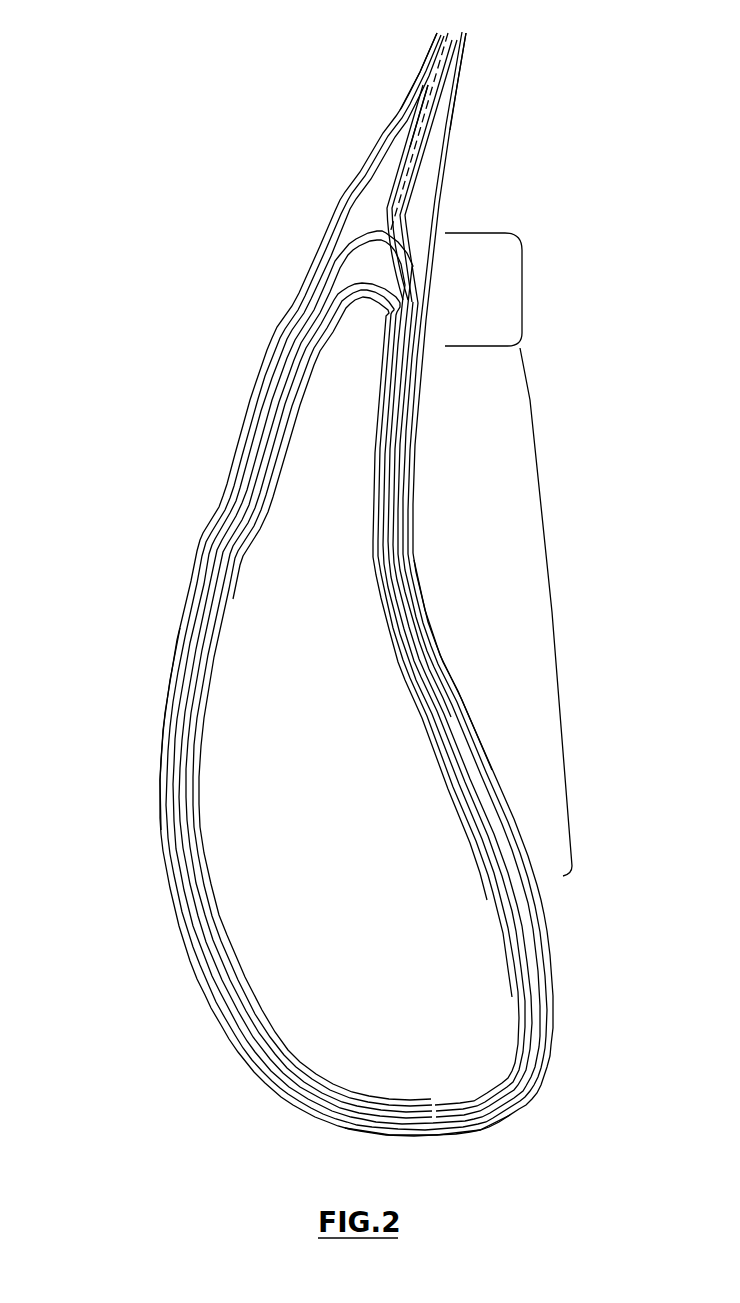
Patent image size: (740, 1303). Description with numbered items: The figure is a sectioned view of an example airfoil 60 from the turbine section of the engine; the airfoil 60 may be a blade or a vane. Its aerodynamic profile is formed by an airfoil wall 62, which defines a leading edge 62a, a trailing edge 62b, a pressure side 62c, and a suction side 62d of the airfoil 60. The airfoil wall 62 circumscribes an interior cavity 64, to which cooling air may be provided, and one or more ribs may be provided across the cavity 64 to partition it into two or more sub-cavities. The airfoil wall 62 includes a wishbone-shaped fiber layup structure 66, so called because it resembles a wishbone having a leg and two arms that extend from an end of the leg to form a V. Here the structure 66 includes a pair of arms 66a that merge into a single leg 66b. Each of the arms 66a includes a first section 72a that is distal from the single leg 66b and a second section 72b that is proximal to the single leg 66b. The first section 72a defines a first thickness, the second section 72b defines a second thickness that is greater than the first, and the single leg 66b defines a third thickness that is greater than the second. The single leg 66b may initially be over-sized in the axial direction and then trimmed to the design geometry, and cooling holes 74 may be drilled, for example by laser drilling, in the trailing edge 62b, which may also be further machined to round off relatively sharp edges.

The airfoil 60 is at (110, 967).
The airfoil wall 62 is at (168, 633).
The leading edge 62a is at (507, 1130).
The trailing edge 62b is at (472, 82).
The pressure side 62c is at (447, 638).
The suction side 62d is at (150, 738).
The interior cavity 64 is at (318, 587).
The wishbone-shaped fiber layup structure 66 is at (426, 160).
The arms 66a is at (272, 370).
The single leg 66b is at (395, 191).
The first section 72a is at (552, 612).
The second section 72b is at (522, 291).
The cooling holes 74 is at (431, 83).